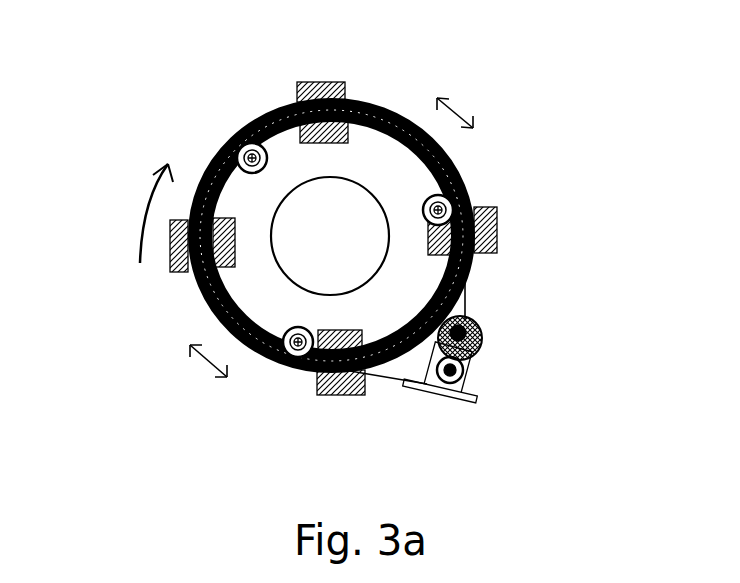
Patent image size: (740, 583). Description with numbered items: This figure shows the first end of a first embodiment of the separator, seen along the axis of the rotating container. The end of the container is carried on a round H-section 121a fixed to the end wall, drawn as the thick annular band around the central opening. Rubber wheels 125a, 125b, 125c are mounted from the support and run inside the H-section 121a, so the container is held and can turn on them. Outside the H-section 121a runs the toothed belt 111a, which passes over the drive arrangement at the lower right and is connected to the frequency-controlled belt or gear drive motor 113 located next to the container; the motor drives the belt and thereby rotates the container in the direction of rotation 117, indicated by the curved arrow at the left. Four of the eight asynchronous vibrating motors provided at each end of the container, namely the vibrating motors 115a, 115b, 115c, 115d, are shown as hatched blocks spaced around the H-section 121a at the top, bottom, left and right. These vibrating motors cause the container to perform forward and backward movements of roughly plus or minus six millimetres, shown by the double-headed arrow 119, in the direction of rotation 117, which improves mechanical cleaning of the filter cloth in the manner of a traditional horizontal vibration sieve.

The toothed belt 111a is at (470, 303).
The belt or gear drive motor 113 is at (475, 372).
The asynchronous vibrating motor 115a is at (497, 223).
The asynchronous vibrating motor 115b is at (333, 82).
The asynchronous vibrating motor 115c is at (170, 264).
The asynchronous vibrating motor 115d is at (340, 395).
The direction of rotation 117 is at (127, 190).
The arrow 119 is at (460, 103).
The round H-section 121a is at (460, 167).
The rubber wheel 125a is at (450, 197).
The rubber wheel 125b is at (280, 365).
The rubber wheel 125c is at (243, 125).